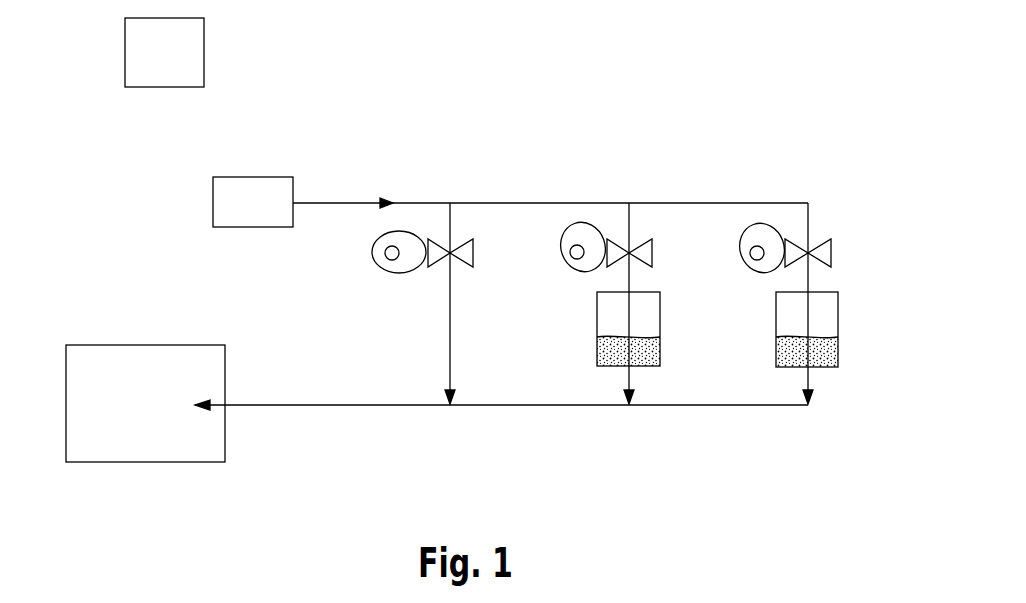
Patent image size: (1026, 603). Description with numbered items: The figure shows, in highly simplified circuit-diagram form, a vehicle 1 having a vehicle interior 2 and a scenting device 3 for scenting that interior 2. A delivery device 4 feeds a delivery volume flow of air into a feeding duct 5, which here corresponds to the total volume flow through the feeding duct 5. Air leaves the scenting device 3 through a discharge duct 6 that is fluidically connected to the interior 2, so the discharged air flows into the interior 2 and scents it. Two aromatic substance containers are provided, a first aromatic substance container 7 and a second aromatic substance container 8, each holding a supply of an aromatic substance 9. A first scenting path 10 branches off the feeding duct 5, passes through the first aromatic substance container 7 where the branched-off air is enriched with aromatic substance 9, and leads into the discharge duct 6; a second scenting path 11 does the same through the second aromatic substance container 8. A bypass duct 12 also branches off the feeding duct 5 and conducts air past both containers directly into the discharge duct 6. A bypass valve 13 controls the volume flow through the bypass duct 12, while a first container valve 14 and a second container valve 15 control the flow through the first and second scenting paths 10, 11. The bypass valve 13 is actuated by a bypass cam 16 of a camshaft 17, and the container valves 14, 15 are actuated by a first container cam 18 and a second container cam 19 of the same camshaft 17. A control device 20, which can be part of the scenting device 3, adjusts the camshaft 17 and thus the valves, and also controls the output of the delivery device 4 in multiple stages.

The vehicle 1 is at (858, 100).
The vehicle interior 2 is at (92, 345).
The scenting device 3 is at (703, 150).
The delivery device 4 is at (265, 177).
The feeding duct 5 is at (422, 201).
The discharge duct 6 is at (372, 407).
The first aromatic substance container 7 is at (670, 322).
The second aromatic substance container 8 is at (848, 323).
The aromatic substance 9 is at (647, 352).
The first scenting path 10 is at (631, 226).
The second scenting path 11 is at (810, 222).
The bypass duct 12 is at (452, 347).
The bypass valve 13 is at (475, 256).
The first container valve 14 is at (653, 255).
The second container valve 15 is at (832, 255).
The bypass cam 16 is at (388, 272).
The camshaft 17 is at (306, 280).
The first container cam 18 is at (583, 222).
The second container cam 19 is at (766, 222).
The control device 20 is at (125, 57).